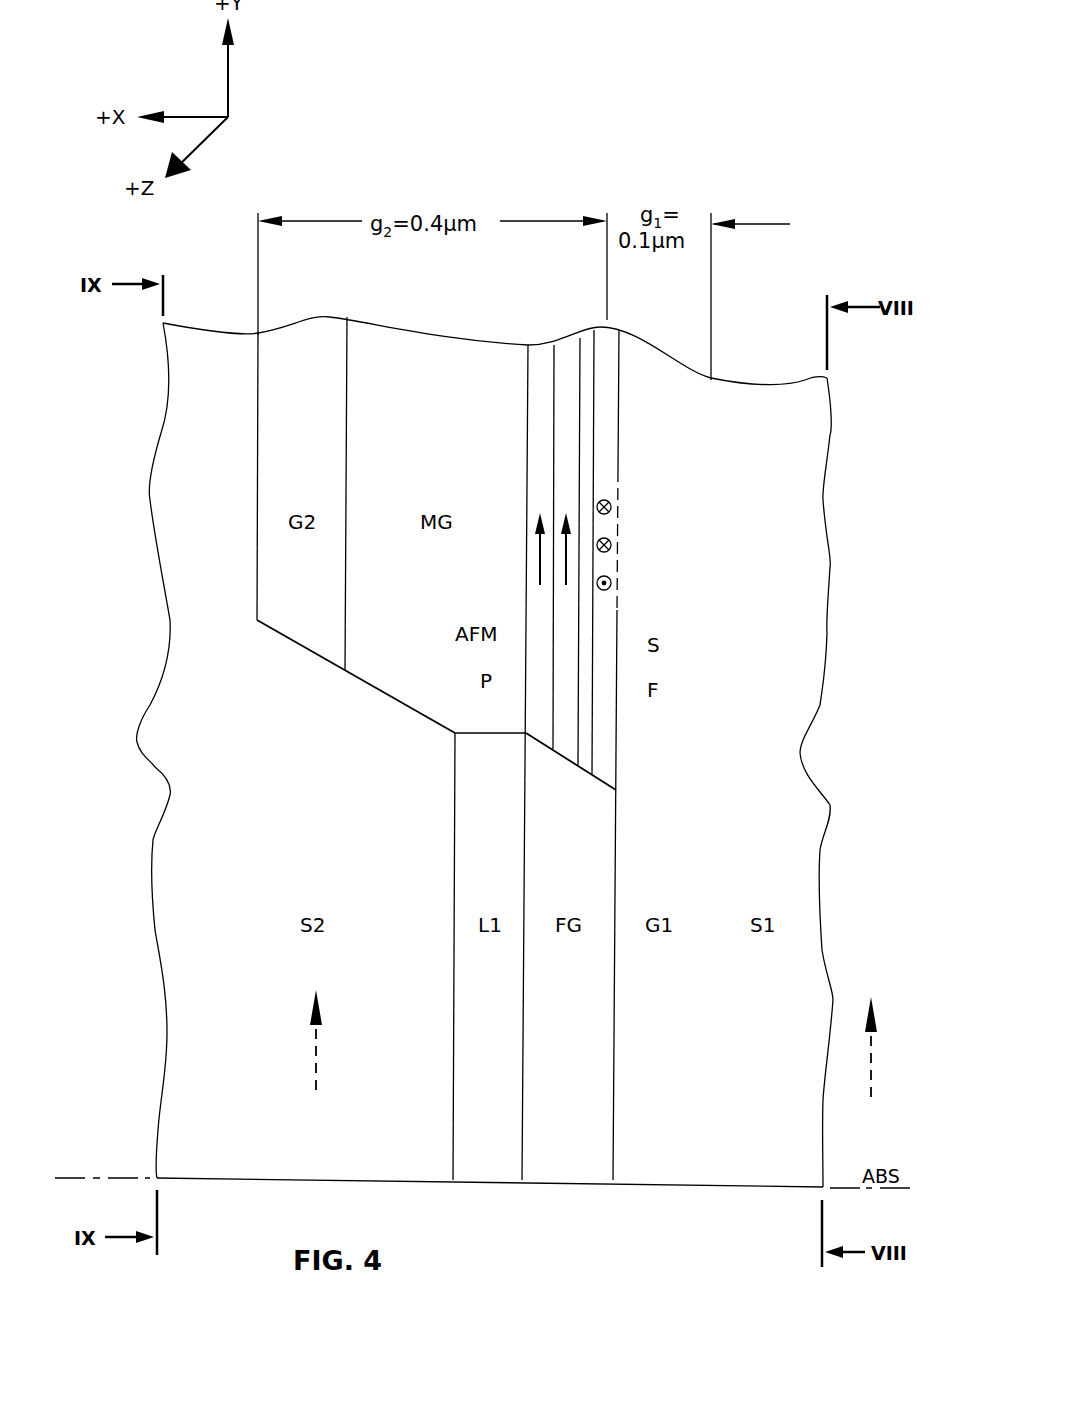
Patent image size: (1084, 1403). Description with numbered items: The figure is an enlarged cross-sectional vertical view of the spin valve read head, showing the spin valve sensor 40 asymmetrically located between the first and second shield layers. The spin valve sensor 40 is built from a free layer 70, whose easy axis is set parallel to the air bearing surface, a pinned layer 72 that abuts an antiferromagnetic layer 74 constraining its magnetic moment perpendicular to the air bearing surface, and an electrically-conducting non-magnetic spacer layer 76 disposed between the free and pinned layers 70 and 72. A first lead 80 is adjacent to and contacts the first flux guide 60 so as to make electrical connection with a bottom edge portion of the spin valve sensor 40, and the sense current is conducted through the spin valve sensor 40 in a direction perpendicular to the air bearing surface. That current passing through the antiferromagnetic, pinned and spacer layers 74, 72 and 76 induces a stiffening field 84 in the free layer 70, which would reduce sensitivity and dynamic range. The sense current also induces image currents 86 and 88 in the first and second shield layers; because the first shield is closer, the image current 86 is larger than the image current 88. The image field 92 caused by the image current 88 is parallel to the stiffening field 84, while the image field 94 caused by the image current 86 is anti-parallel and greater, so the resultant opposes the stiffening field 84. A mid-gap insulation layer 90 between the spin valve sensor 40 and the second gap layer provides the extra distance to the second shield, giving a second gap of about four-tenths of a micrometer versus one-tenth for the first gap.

The spin valve sensor 40 is at (632, 738).
The first flux guide 60 is at (568, 1170).
The free layer 70 is at (610, 452).
The pinned layer 72 is at (565, 440).
The antiferromagnetic (AFM) layer 74 is at (539, 393).
The spacer layer 76 is at (585, 400).
The first lead 80 is at (473, 815).
The stiffening field 84 is at (612, 507).
The image current 86 is at (866, 1082).
The image current 88 is at (310, 1078).
The mid-gap (MG) insulation layer 90 is at (423, 696).
The image field 92 is at (612, 545).
The image field 94 is at (636, 584).